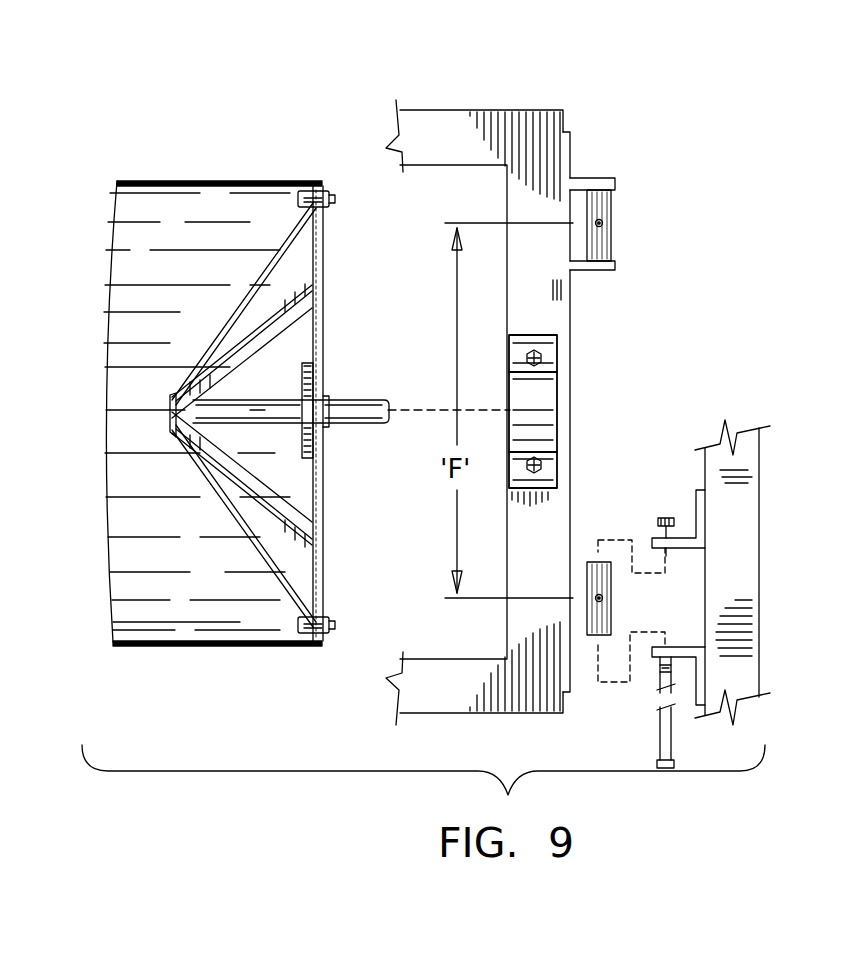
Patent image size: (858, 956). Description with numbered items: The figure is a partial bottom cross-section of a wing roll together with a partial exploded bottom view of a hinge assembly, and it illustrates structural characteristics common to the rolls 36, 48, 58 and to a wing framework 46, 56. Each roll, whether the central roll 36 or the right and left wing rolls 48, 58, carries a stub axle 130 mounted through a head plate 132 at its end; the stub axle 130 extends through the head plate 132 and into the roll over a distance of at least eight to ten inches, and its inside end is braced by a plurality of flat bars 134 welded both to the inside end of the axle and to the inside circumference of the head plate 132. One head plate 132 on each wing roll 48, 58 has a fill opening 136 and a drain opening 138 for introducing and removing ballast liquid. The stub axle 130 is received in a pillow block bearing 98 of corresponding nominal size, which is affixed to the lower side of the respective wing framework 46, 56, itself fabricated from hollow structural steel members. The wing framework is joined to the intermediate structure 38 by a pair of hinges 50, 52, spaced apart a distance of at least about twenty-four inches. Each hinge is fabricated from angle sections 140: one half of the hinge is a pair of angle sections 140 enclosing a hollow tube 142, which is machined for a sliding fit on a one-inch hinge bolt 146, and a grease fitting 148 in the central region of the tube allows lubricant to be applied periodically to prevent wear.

The central roll 36 is at (213, 376).
The right wing roll 48 is at (213, 376).
The left wing roll 58 is at (228, 178).
The right wing framework 46 is at (474, 388).
The left wing framework 56 is at (446, 130).
The hinge 50 is at (700, 262).
The hinge 52 is at (688, 433).
The intermediate structure 38 is at (748, 540).
The pillow block bearing 98 is at (550, 393).
The stub axle 130 is at (355, 398).
The head plate 132 is at (320, 265).
The flat bars 134 is at (200, 383).
The fill opening 136 is at (330, 196).
The drain opening 138 is at (332, 622).
The angle sections 140 is at (572, 152).
The hollow tube 142 is at (615, 243).
The hinge bolt 146 is at (655, 733).
The grease fitting 148 is at (605, 225).